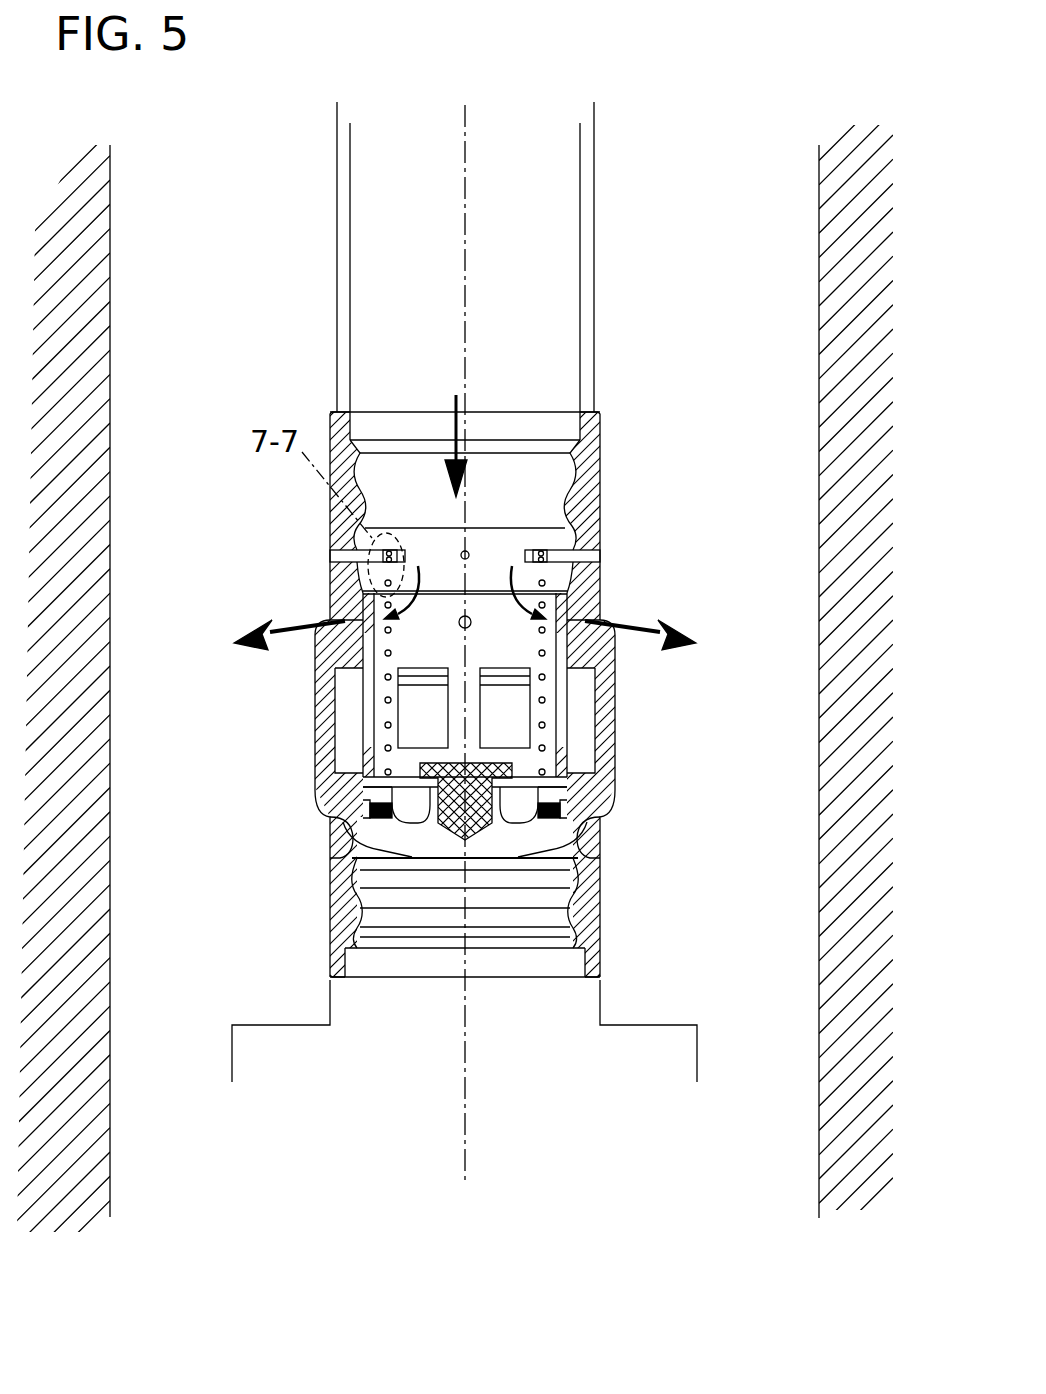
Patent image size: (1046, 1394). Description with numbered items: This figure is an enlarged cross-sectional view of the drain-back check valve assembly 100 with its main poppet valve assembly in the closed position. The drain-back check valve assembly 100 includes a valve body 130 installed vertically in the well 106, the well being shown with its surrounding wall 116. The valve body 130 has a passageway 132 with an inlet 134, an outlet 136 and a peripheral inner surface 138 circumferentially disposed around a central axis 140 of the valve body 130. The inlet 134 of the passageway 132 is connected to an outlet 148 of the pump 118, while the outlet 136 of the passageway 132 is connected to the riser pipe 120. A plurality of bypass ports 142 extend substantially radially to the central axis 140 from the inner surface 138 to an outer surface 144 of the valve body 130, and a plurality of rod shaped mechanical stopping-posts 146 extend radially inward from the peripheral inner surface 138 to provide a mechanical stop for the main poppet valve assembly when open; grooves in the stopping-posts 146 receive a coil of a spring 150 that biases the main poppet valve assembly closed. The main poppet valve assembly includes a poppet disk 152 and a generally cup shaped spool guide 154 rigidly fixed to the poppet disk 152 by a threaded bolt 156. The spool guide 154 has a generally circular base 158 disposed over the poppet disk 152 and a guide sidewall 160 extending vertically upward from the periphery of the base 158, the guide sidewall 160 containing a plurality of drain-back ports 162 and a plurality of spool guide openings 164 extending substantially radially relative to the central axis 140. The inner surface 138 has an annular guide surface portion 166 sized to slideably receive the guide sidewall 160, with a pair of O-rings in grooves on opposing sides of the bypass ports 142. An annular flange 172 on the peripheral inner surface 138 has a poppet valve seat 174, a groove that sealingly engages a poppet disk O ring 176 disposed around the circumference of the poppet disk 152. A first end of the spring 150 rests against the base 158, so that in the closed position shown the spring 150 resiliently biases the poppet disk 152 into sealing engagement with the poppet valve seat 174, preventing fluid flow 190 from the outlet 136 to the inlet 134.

The drain-back check valve assembly 100 is at (622, 424).
The well 106 is at (803, 297).
The casing wall 116 is at (819, 346).
The pump 118 is at (697, 1053).
The riser pipe 120 is at (594, 256).
The valve body 130 is at (592, 484).
The passageway 132 is at (508, 422).
The inlet 134 is at (488, 980).
The outlet 136 is at (385, 408).
The peripheral inner surface 138 is at (352, 426).
The central axis 140 is at (465, 224).
The bypass ports 142 is at (330, 613).
The outer surface 144 is at (602, 492).
The mechanical stopping-posts 146 is at (583, 558).
The outlet of the pump 148 is at (603, 995).
The spring 150 is at (416, 708).
The poppet disk 152 is at (455, 806).
The spool guide 154 is at (365, 788).
The threaded bolt 156 is at (395, 862).
The base 158 is at (515, 780).
The guide sidewall 160 is at (345, 683).
The drain-back ports 162 is at (362, 613).
The spool guide openings 164 is at (366, 699).
The annular guide surface portion 166 is at (363, 612).
The annular flange 172 is at (347, 827).
The poppet valve seat 174 is at (372, 812).
The poppet disk O ring 176 is at (560, 832).
The fluid flow 190 is at (463, 425).